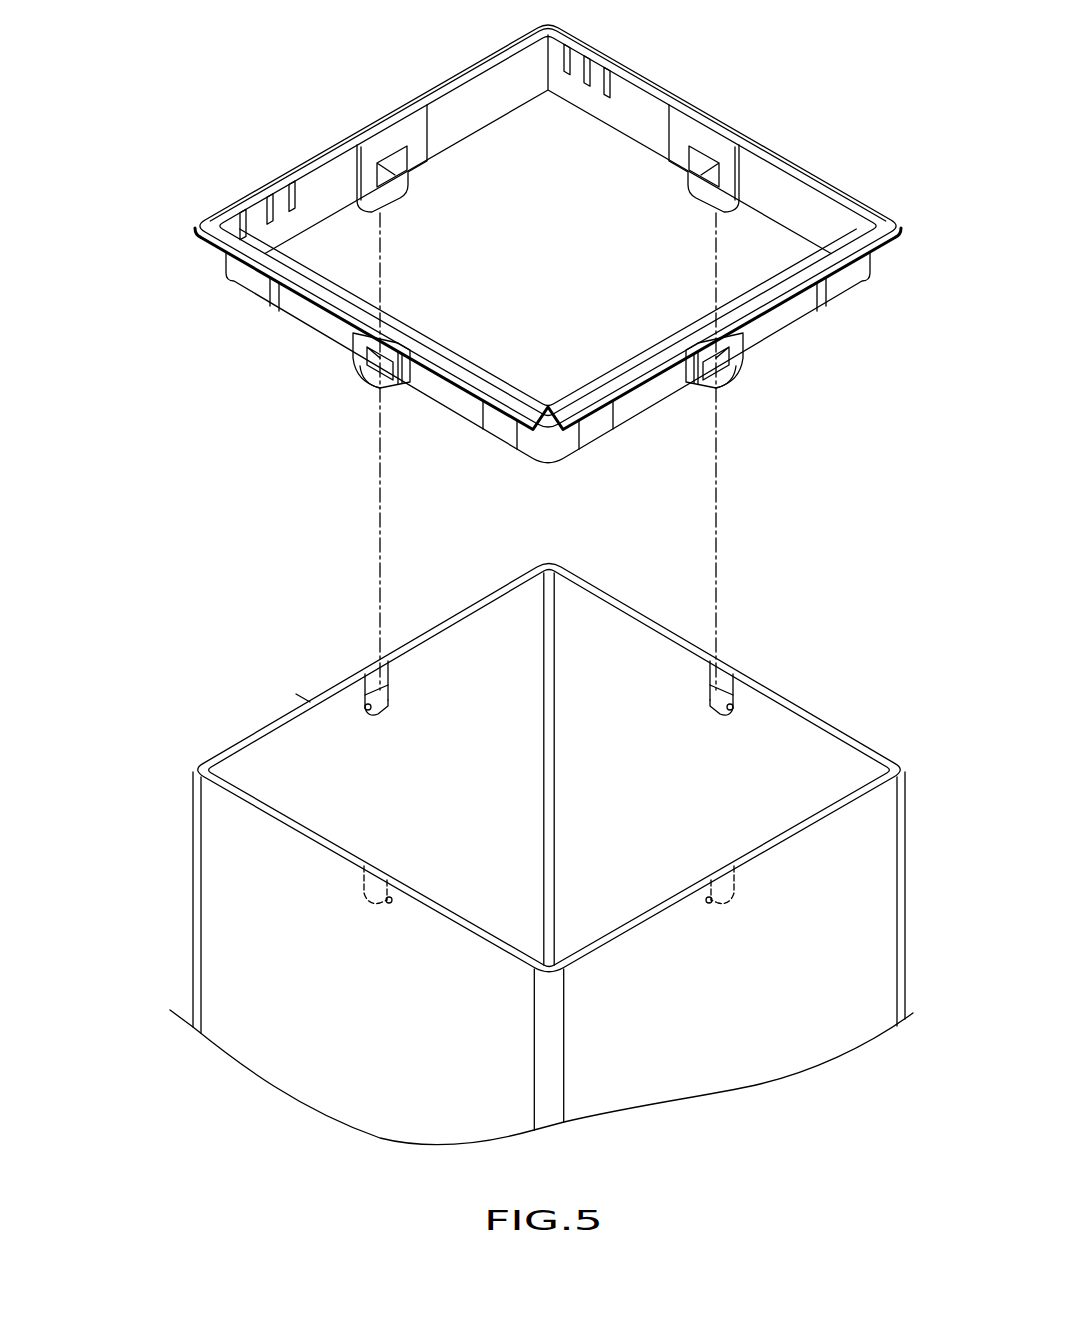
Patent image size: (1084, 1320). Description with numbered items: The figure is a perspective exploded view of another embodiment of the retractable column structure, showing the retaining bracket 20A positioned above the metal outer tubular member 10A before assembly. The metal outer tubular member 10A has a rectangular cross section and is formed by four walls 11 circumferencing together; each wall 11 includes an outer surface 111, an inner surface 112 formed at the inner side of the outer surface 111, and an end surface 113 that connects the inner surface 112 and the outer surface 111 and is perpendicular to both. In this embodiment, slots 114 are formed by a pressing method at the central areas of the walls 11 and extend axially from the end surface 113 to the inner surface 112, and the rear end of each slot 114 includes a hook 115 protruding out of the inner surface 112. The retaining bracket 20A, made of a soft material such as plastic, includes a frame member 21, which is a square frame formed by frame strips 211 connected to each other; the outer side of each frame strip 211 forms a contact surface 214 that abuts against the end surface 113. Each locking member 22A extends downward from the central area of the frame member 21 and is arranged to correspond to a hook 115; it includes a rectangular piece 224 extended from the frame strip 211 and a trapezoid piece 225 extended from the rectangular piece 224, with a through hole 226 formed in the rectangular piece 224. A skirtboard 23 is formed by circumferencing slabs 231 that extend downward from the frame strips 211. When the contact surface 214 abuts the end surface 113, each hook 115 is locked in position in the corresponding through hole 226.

The retaining bracket 20A is at (740, 79).
The frame member 21 is at (132, 152).
The frame strips 211 is at (256, 186).
The locking member 22A is at (287, 490).
The contact surface 214 is at (770, 322).
The rectangular piece 224 is at (353, 343).
The trapezoid piece 225 is at (380, 387).
The through hole 226 is at (380, 363).
The skirtboard 23 is at (627, 502).
The slabs 231 is at (458, 403).
The metal outer tubular member 10A is at (168, 842).
The walls 11 is at (216, 727).
The outer surface 111 is at (303, 697).
The inner surface 112 is at (338, 737).
The end surface 113 is at (270, 723).
The slots 114 is at (373, 674).
The hook 115 is at (380, 693).